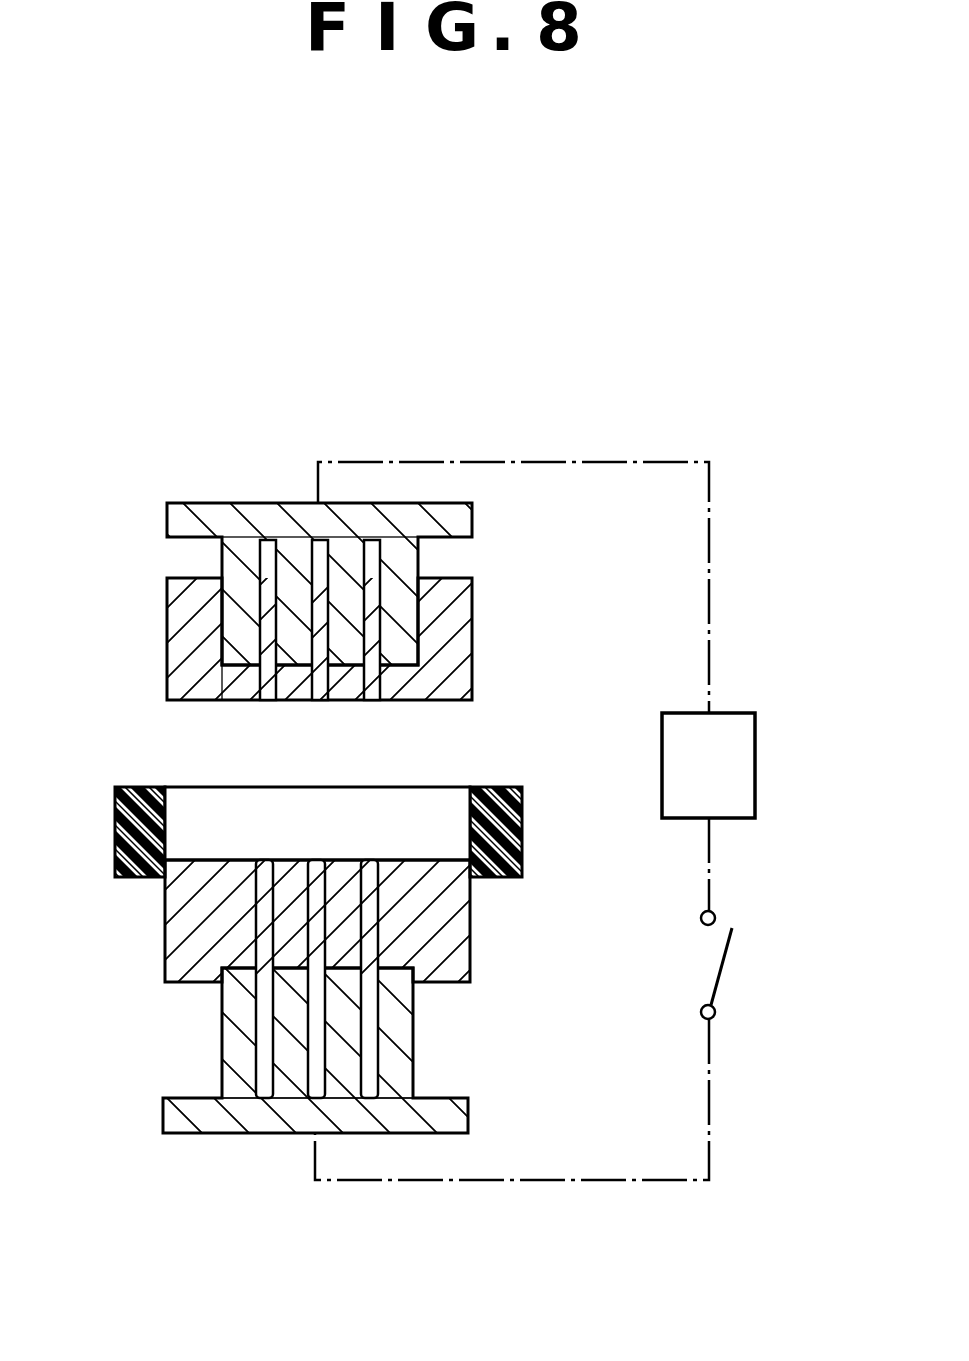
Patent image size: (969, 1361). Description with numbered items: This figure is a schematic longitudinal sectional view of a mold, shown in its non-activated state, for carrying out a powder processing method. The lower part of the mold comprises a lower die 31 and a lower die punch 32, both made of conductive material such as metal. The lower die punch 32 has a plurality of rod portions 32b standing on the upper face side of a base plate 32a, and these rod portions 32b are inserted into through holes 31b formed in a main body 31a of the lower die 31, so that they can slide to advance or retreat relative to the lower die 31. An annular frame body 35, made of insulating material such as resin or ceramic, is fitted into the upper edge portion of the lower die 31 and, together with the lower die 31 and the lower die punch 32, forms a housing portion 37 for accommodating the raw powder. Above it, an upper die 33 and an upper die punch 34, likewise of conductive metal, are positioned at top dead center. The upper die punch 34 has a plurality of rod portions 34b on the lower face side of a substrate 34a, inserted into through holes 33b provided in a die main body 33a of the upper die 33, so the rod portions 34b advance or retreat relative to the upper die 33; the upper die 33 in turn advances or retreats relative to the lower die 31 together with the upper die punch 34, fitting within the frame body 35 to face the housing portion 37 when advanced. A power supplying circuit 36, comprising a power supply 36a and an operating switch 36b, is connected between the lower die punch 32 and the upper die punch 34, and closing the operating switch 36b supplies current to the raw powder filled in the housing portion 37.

The lower die 31 is at (474, 926).
The main body 31a is at (228, 1040).
The through holes 31b is at (222, 912).
The lower die punch 32 is at (190, 1135).
The base plate 32a is at (262, 1122).
The rod portions 32b is at (407, 1033).
The upper die 33 is at (480, 633).
The die main body 33a is at (195, 678).
The through holes 33b is at (237, 603).
The upper die punch 34 is at (205, 503).
The substrate 34a is at (297, 517).
The rod portions 34b is at (407, 565).
The frame body 35 is at (497, 785).
The power supplying circuit 36 is at (590, 460).
The power supply 36a is at (723, 718).
The operating switch 36b is at (725, 958).
The housing portion 37 is at (257, 810).